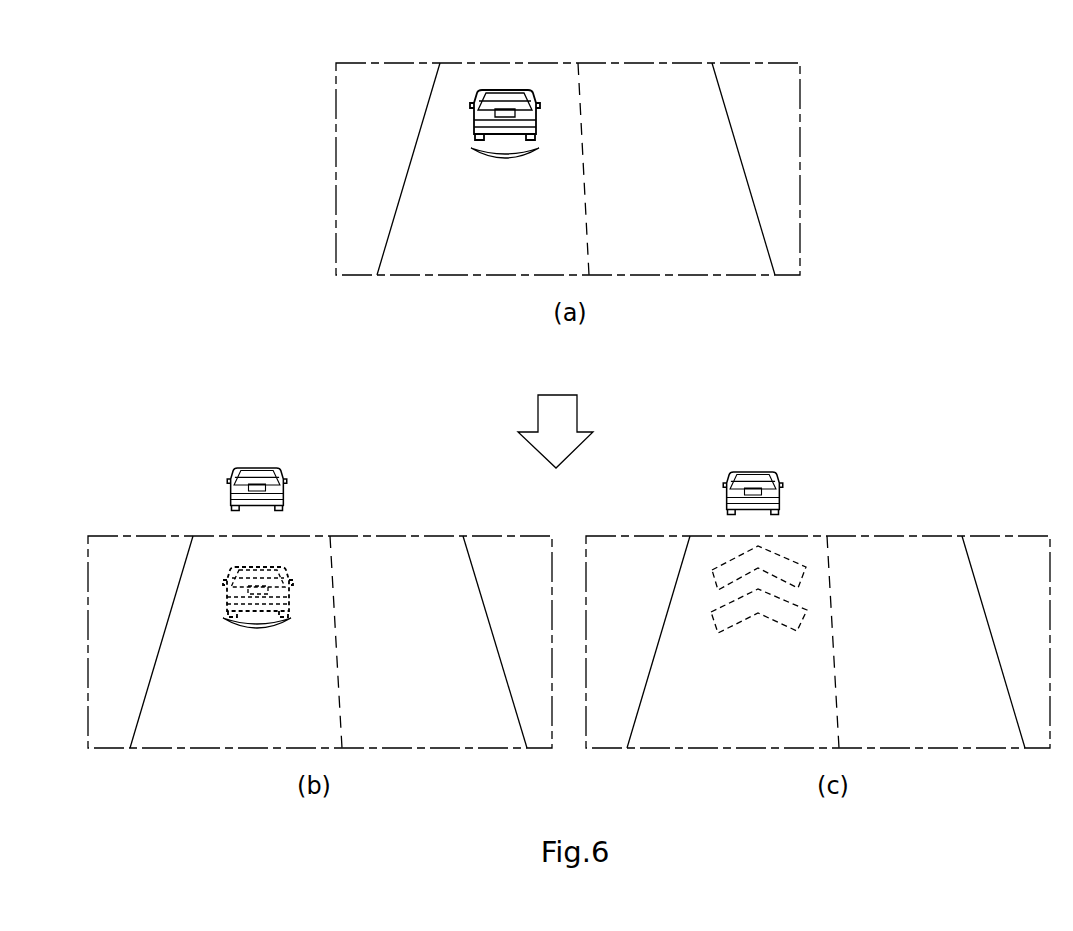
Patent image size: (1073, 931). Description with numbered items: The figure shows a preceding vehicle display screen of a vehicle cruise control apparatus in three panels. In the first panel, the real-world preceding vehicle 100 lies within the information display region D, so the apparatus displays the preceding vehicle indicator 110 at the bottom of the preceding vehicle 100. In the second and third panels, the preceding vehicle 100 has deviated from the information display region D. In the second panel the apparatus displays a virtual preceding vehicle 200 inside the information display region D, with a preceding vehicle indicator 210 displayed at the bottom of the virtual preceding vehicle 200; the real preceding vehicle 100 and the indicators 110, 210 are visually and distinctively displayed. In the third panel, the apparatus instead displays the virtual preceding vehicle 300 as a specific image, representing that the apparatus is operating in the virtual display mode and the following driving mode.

The preceding vehicle 100 is at (504, 90).
The preceding vehicle indicator 110 is at (472, 149).
The virtual preceding vehicle 200 is at (288, 579).
The preceding vehicle indicator 210 is at (292, 617).
The virtual preceding vehicle 300 is at (806, 568).
The information display region D is at (800, 130).